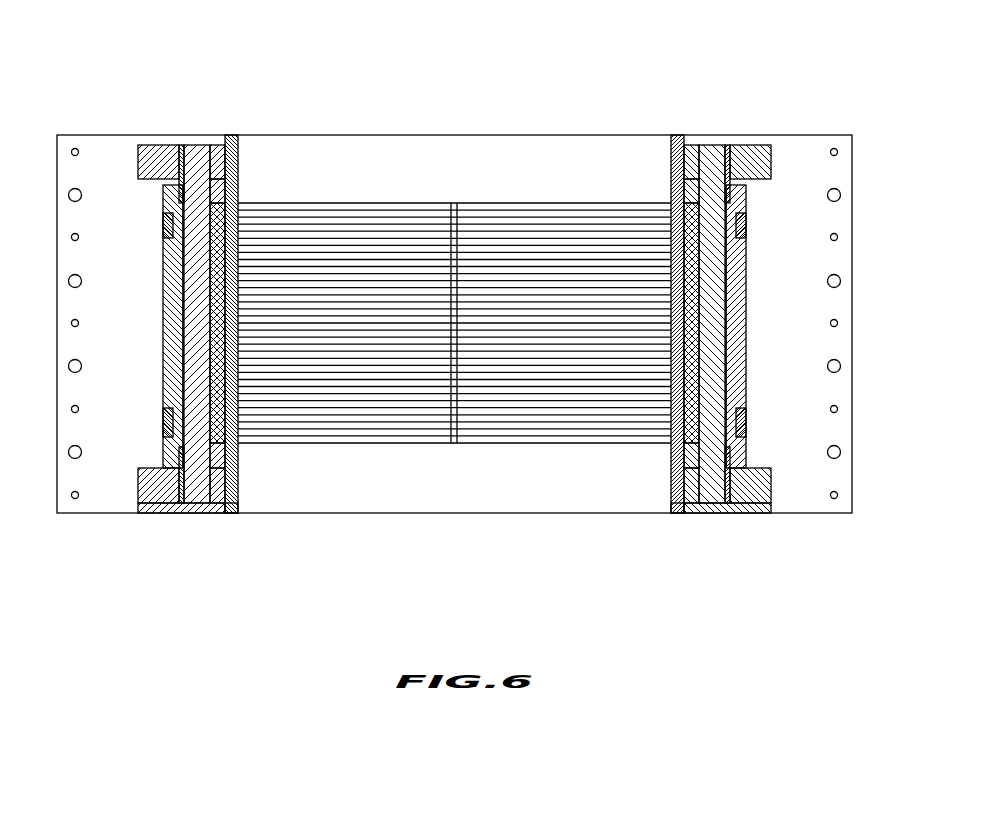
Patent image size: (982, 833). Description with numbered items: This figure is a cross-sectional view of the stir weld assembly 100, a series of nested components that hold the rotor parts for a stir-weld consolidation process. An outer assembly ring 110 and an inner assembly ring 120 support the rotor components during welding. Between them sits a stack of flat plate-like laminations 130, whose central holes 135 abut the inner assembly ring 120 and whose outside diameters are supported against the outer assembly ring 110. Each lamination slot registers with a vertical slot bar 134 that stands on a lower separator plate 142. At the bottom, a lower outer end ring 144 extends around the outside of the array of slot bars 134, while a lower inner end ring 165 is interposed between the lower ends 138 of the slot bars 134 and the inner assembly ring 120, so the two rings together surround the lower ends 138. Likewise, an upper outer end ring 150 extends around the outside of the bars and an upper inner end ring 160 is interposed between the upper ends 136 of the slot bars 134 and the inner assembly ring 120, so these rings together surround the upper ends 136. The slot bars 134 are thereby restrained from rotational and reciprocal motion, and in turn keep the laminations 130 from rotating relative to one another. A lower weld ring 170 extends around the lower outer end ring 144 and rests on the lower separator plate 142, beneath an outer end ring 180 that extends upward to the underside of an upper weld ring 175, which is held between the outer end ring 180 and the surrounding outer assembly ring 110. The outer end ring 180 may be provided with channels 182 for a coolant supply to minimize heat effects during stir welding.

The stir weld assembly 100 is at (828, 69).
The outer assembly ring 110 is at (60, 136).
The inner assembly ring 120 is at (238, 490).
The laminations 130 is at (205, 297).
The slot bar 134 is at (190, 324).
The central holes 135 is at (480, 265).
The upper ends 136 is at (216, 197).
The lower ends 138 is at (226, 463).
The lower separator plate 142 is at (190, 514).
The lower outer end ring 144 is at (180, 461).
The upper outer end ring 150 is at (182, 187).
The upper inner end ring 160 is at (238, 148).
The lower inner end ring 165 is at (236, 503).
The lower weld ring 170 is at (140, 494).
The upper weld ring 175 is at (138, 152).
The outer end ring 180 is at (172, 379).
The channels 182 is at (164, 428).